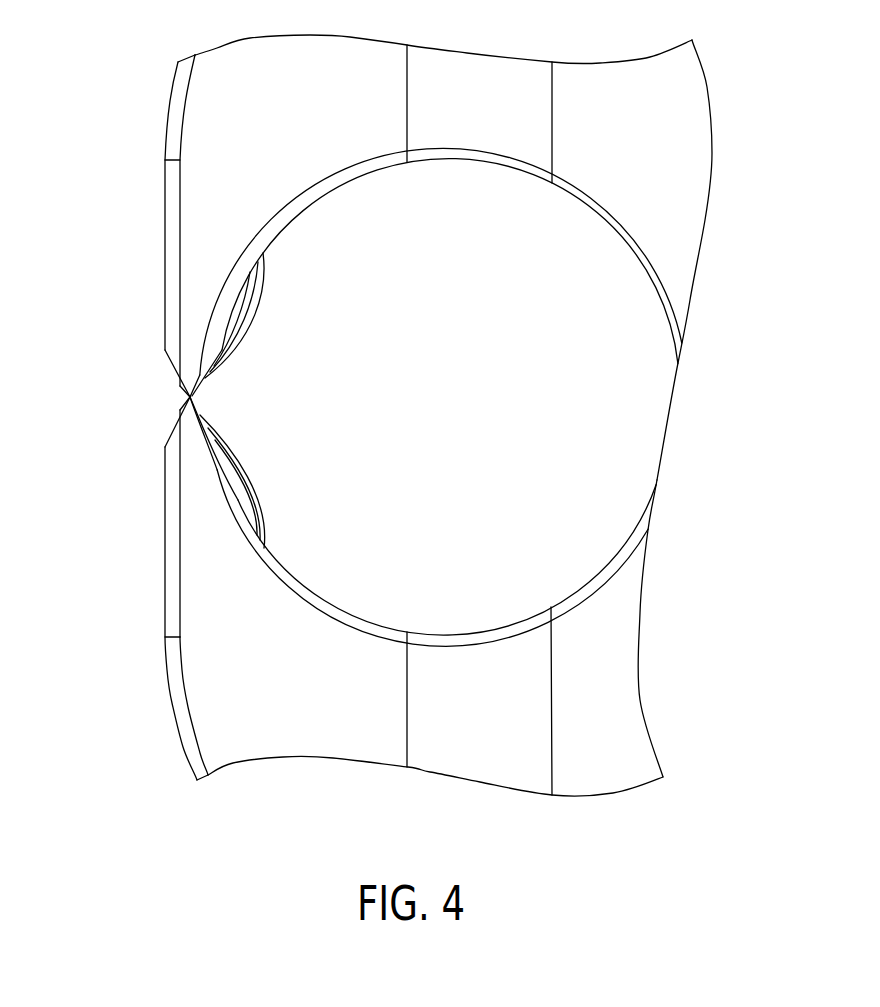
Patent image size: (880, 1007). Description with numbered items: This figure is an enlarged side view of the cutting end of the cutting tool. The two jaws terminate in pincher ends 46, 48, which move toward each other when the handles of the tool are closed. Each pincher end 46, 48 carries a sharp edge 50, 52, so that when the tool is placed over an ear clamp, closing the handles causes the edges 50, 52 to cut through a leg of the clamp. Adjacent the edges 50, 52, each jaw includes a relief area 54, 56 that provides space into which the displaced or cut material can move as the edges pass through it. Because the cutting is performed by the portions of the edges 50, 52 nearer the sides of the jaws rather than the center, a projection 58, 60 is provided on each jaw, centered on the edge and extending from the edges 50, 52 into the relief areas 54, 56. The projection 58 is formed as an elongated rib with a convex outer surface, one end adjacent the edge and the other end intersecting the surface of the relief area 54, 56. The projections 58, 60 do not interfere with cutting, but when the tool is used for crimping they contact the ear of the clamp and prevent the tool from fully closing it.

The pincher end 46 is at (203, 673).
The pincher end 48 is at (192, 150).
The edge 50 is at (162, 408).
The edge 52 is at (162, 392).
The relief area 54 is at (322, 595).
The relief area 56 is at (342, 185).
The projection 58 is at (258, 492).
The projection 60 is at (255, 318).